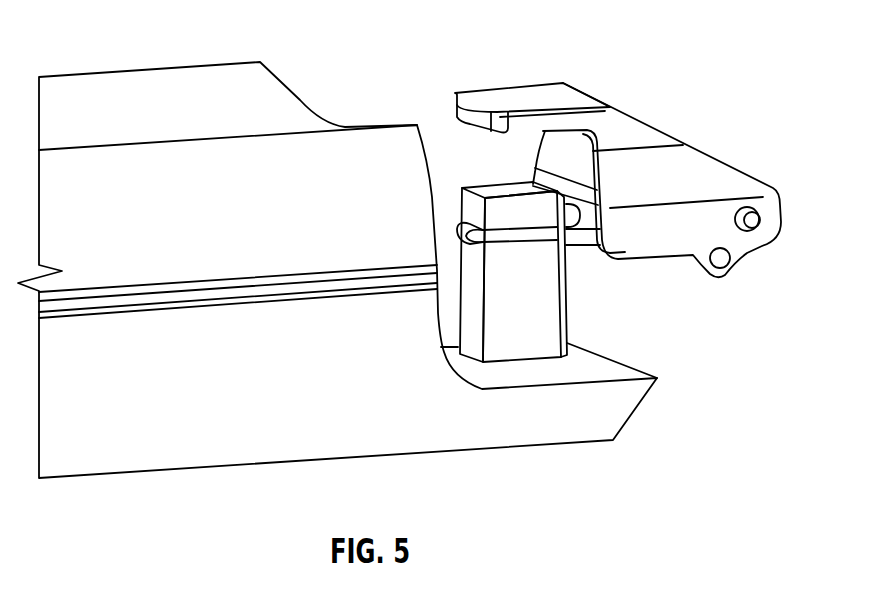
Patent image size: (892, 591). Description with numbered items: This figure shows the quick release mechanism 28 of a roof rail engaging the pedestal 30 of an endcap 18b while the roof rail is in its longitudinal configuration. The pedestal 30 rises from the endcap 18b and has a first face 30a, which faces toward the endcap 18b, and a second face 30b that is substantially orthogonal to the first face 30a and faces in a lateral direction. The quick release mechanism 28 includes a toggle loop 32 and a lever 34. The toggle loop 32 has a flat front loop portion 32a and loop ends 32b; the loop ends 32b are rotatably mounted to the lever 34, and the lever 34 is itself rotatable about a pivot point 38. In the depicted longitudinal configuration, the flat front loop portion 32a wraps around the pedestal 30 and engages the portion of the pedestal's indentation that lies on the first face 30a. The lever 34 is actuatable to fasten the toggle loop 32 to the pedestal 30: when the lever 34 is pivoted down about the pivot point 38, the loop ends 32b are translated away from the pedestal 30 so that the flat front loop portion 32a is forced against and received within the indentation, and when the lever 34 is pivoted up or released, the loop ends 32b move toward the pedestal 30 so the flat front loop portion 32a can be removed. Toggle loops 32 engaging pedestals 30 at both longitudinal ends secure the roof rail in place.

The endcap 18b is at (157, 65).
The quick release mechanism 28 is at (430, 55).
The pedestal 30 is at (501, 272).
The first face 30a is at (460, 317).
The second face 30b is at (566, 338).
The toggle loop 32 is at (484, 236).
The flat front loop portion 32a is at (455, 230).
The loop ends 32b is at (585, 241).
The lever 34 is at (518, 98).
The pivot point 38 is at (760, 222).